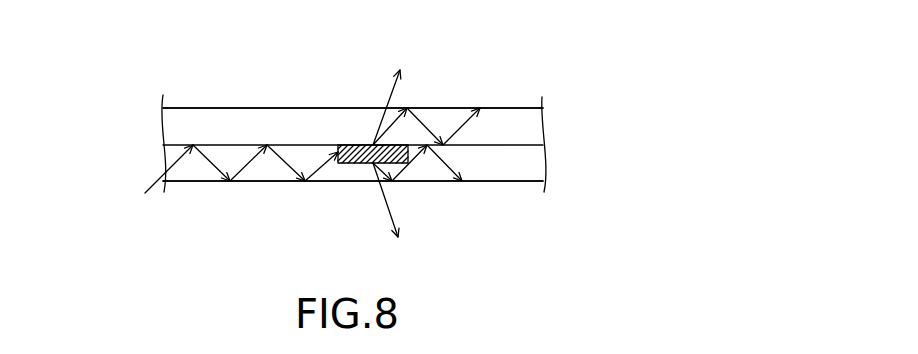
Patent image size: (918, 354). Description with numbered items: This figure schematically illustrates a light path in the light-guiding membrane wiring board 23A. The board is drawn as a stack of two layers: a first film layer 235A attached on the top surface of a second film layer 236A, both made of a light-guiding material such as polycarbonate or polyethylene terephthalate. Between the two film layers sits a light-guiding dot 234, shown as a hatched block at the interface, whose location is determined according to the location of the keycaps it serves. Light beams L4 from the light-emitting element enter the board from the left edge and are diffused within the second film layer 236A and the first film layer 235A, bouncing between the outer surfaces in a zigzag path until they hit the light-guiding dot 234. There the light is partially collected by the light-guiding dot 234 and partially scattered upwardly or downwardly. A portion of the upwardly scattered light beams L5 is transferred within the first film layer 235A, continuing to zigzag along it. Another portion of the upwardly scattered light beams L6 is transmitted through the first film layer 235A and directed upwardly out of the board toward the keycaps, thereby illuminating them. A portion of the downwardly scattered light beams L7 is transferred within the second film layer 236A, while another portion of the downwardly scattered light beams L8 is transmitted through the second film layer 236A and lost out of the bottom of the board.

The light-guiding membrane wiring board 23A is at (246, 73).
The first film layer 235A is at (500, 120).
The second film layer 236A is at (498, 168).
The light-guiding dots 234 is at (343, 163).
The light beams L4 is at (155, 182).
The light beams scattered upwardly L5 is at (388, 132).
The light beams scattered upwardly L6 is at (388, 102).
The light beams scattered downwardly L7 is at (403, 168).
The light beams scattered downwardly L8 is at (387, 208).